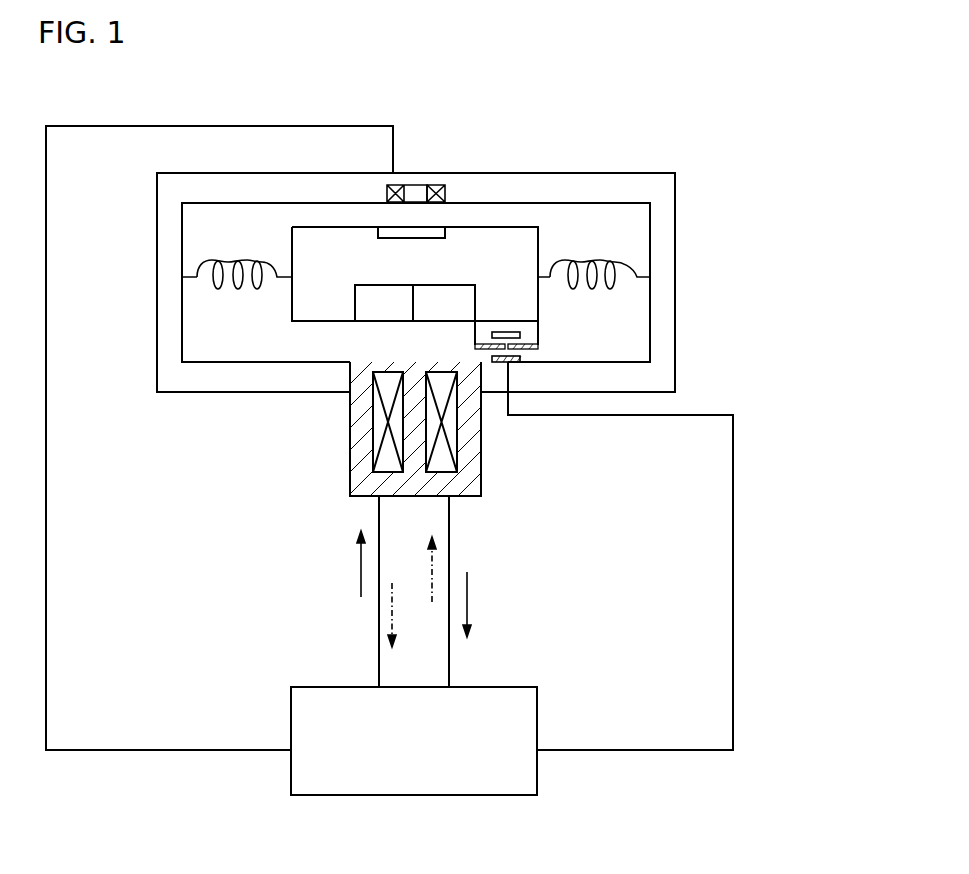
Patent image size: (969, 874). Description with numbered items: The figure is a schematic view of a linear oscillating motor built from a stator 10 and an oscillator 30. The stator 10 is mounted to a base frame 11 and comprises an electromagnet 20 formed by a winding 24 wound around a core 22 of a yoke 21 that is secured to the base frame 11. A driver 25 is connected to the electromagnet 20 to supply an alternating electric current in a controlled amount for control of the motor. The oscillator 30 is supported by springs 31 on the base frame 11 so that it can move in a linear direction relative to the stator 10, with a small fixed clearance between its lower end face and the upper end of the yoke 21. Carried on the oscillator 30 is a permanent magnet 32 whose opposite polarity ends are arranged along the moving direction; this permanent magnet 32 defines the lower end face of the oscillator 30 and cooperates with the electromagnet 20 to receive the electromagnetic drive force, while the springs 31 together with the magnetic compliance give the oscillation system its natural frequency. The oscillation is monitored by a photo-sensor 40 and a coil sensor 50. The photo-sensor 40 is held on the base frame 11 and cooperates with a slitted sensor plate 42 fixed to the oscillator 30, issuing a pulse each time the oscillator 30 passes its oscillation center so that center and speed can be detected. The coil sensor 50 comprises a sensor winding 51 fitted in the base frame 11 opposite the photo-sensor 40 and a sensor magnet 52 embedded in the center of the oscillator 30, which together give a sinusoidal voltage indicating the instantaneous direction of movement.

The stator 10 is at (348, 496).
The base frame 11 is at (157, 393).
The electromagnet 20 is at (415, 441).
The yoke 21 is at (347, 406).
The core 22 is at (410, 420).
The winding 24 is at (450, 428).
The driver 25 is at (537, 687).
The oscillator 30 is at (537, 228).
The springs 31 is at (233, 255).
The permanent magnet 32 is at (443, 284).
The photo-sensor 40 is at (523, 357).
The sensor plate 42 is at (538, 345).
The coil sensor 50 is at (412, 184).
The sensor winding 51 is at (444, 184).
The sensor magnet 52 is at (443, 228).